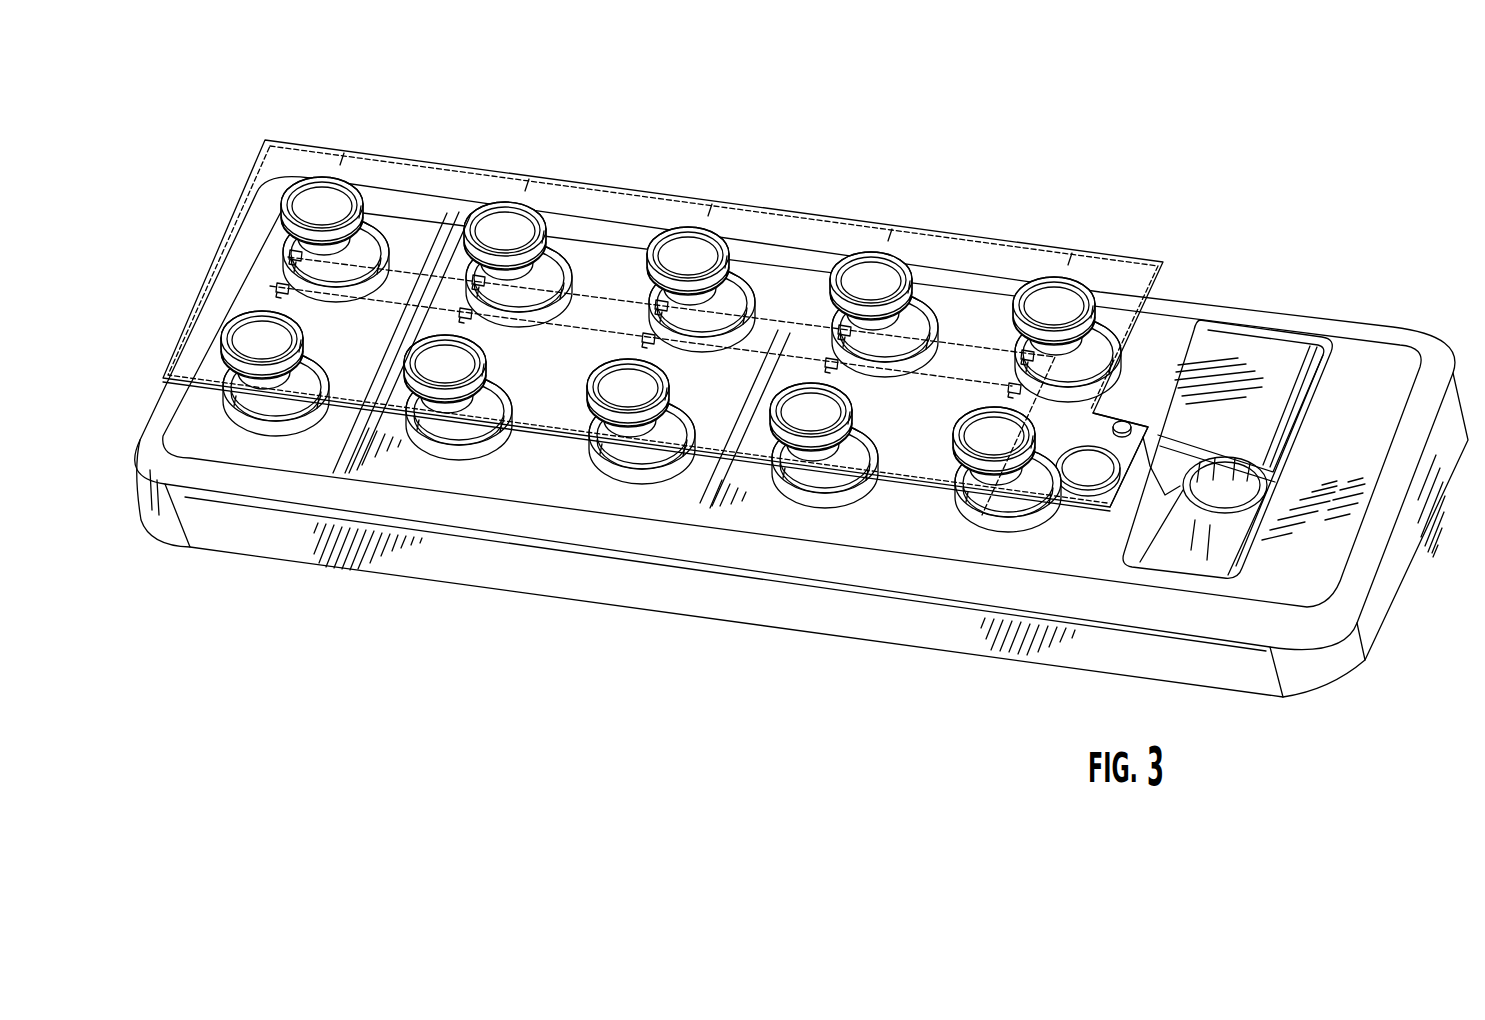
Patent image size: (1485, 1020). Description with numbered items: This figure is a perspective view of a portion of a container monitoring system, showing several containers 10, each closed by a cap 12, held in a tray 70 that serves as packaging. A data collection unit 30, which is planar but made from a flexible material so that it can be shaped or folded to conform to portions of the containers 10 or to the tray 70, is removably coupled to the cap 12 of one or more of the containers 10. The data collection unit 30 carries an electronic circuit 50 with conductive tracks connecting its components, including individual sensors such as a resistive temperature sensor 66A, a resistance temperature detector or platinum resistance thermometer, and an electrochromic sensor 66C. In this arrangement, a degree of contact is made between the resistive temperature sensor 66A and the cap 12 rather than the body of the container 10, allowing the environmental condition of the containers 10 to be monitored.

The container 10 is at (220, 401).
The cap 12 is at (247, 337).
The data collection unit 30 is at (421, 178).
The electronic circuit 50 is at (938, 378).
The resistive temperature sensor 66A is at (683, 243).
The electrochromic sensor 66C is at (278, 282).
The tray 70 is at (333, 572).